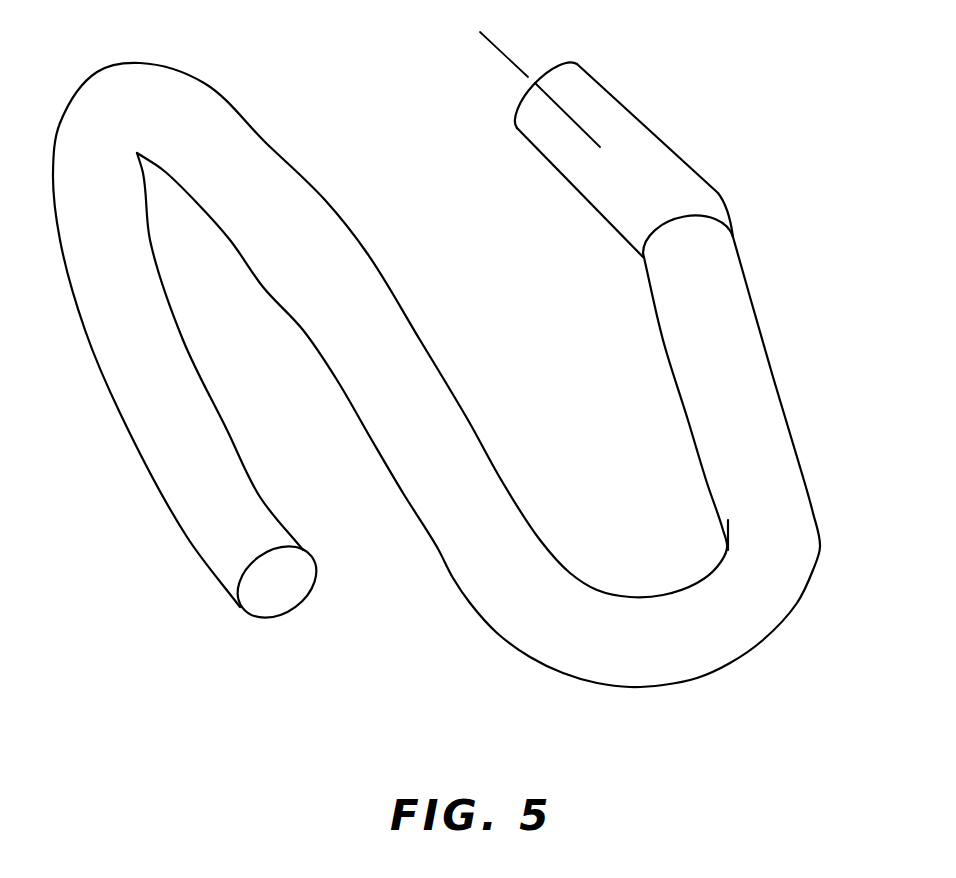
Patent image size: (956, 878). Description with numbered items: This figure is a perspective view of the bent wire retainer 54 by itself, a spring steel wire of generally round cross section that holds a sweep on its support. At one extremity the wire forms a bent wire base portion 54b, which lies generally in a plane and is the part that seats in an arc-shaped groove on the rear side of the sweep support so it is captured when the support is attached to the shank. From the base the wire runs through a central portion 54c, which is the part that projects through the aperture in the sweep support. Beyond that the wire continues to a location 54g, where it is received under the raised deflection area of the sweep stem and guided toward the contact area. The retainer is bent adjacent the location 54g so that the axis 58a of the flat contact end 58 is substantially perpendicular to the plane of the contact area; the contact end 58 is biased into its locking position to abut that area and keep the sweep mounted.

The bent wire retainer 54 is at (540, 540).
The bent wire base portion 54b is at (188, 533).
The central portion 54c is at (717, 663).
The location offset from the end 54g is at (718, 195).
The contact end 58 is at (558, 72).
The axis of the end 58a is at (508, 60).